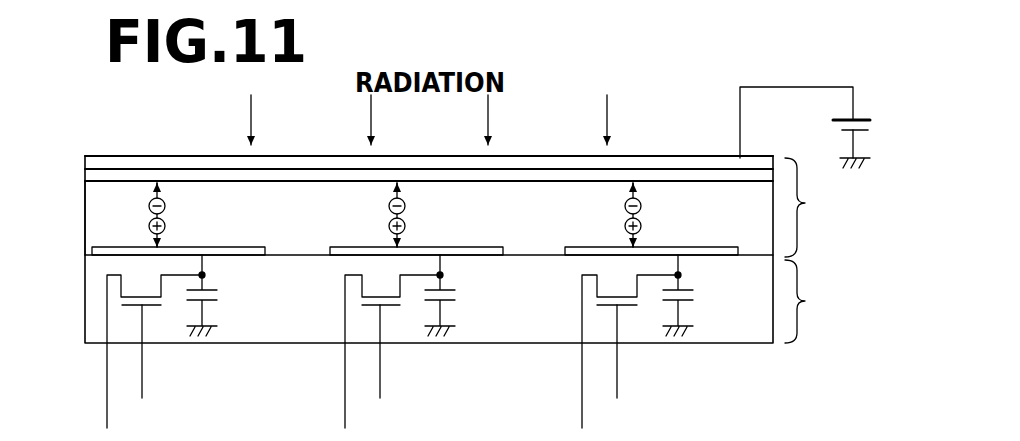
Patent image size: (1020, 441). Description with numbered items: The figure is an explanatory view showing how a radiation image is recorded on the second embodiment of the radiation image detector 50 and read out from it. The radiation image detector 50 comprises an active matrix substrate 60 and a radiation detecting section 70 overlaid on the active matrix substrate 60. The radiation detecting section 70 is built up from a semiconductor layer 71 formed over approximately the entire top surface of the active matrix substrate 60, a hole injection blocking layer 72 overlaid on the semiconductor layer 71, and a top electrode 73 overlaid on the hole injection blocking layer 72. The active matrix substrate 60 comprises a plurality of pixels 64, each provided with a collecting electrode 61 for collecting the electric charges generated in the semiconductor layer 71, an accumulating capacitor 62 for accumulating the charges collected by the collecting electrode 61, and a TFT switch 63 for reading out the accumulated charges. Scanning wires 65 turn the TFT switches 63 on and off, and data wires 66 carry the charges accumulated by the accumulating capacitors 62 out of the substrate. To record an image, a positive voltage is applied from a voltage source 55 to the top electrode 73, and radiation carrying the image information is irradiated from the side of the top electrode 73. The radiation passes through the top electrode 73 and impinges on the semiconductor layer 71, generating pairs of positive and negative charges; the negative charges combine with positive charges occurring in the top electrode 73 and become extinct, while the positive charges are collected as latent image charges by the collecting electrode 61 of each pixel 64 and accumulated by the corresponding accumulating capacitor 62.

The radiation image detector 50 is at (688, 78).
The voltage source 55 is at (870, 120).
The active matrix substrate 60 is at (811, 301).
The collecting electrode 61 is at (240, 248).
The accumulating capacitor 62 is at (218, 293).
The TFT switch 63 is at (158, 306).
The pixel 64 is at (197, 243).
The scanning wire 65 is at (143, 390).
The data wire 66 is at (106, 360).
The radiation detecting section 70 is at (461, 207).
The semiconductor layer 71 is at (90, 220).
The hole injection blocking layer 72 is at (90, 175).
The top electrode 73 is at (90, 163).